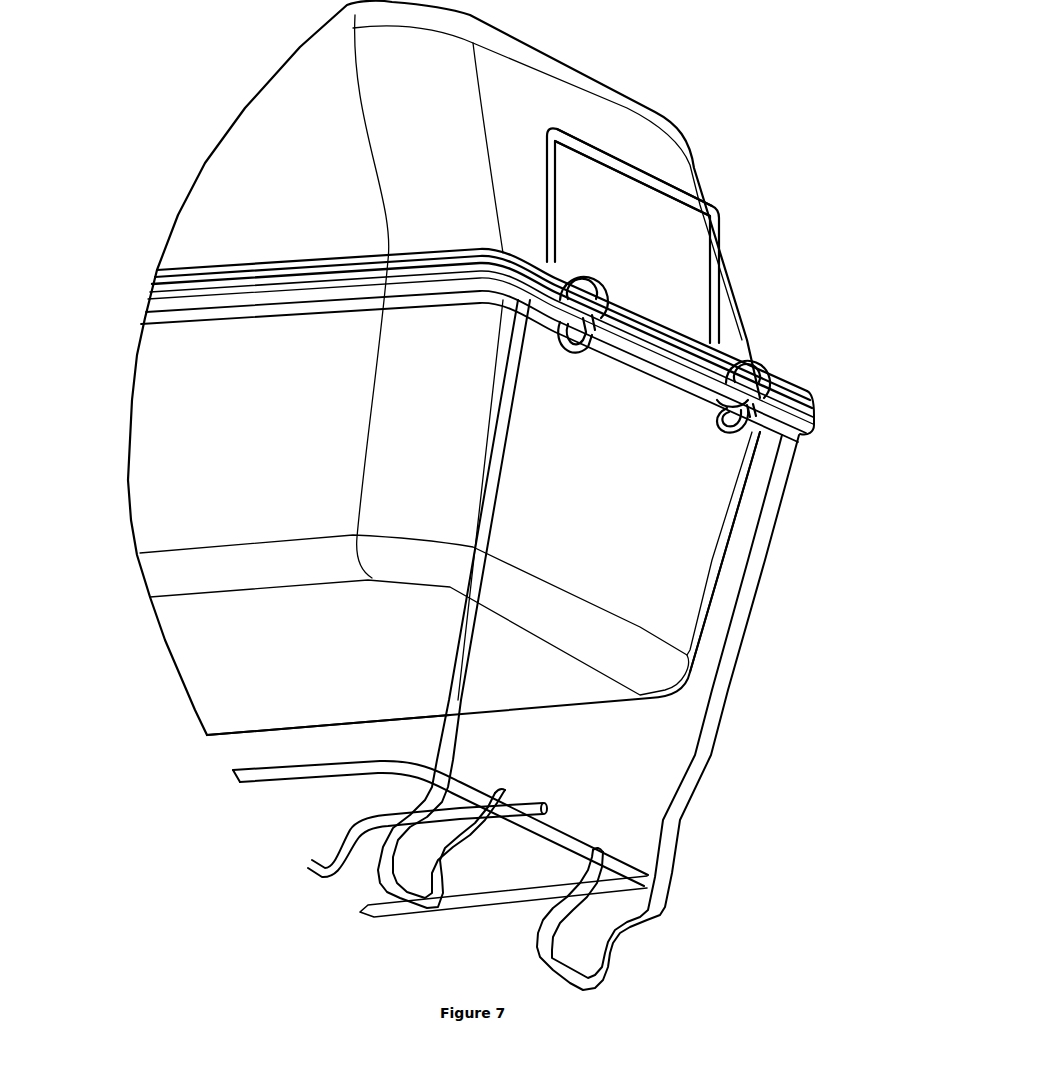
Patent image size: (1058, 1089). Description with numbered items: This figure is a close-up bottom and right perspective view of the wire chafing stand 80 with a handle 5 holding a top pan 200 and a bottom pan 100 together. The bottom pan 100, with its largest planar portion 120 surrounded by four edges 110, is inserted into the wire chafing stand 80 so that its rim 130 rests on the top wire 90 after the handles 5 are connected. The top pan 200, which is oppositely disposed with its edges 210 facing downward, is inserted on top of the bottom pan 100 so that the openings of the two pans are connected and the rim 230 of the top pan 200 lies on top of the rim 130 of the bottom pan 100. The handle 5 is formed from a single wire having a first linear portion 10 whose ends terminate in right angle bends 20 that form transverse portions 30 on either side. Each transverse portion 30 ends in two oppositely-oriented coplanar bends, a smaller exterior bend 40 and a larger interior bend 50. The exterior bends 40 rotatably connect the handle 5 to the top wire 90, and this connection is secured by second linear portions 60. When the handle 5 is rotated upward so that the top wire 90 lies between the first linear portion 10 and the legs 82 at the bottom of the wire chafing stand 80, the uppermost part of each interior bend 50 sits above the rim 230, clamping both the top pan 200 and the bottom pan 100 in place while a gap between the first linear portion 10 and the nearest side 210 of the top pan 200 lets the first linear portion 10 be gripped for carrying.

The handle 5 is at (713, 318).
The first linear portion 10 is at (662, 188).
The right angle bend 20 is at (553, 130).
The transverse portion 30 is at (548, 200).
The exterior bend 40 is at (565, 347).
The interior bend 50 is at (595, 273).
The second linear portion 60 is at (583, 325).
The wire chafing stand 80 is at (768, 525).
The legs 82 is at (548, 962).
The top wire 90 is at (183, 316).
The bottom pan 100 is at (630, 608).
The edges 110 is at (165, 478).
The largest planar portion 120 is at (200, 640).
The rim 130 is at (157, 283).
The top pan 200 is at (263, 108).
The edges 210 is at (247, 163).
The rim 230 is at (160, 270).